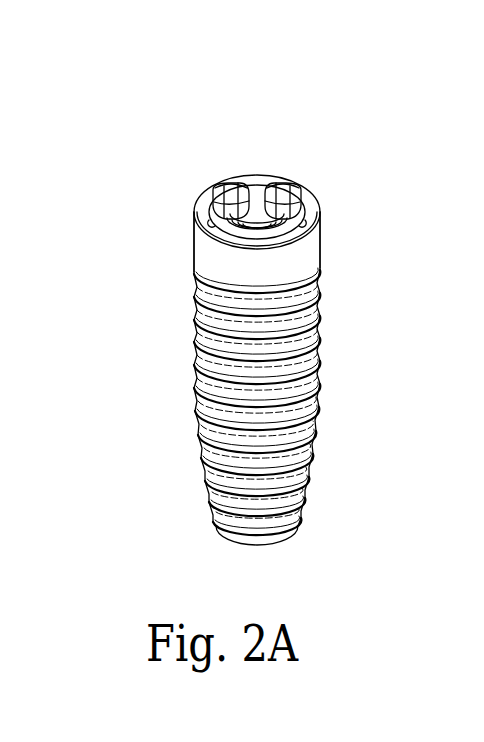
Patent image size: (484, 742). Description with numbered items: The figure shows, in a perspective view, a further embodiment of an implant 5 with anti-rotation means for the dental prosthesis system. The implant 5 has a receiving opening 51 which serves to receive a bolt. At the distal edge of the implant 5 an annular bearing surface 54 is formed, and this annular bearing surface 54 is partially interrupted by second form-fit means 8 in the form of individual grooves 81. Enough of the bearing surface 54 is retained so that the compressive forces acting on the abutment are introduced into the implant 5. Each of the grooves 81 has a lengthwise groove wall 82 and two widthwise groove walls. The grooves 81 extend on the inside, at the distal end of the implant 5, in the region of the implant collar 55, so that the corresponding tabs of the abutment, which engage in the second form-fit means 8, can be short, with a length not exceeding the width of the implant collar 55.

The implant 5 is at (332, 327).
The receiving opening 51 is at (253, 232).
The annular bearing surface 54 is at (313, 210).
The implant collar 55 is at (202, 254).
The second form-fit means 8 is at (221, 192).
The grooves 81 is at (284, 113).
The lengthwise groove wall 82 is at (274, 94).